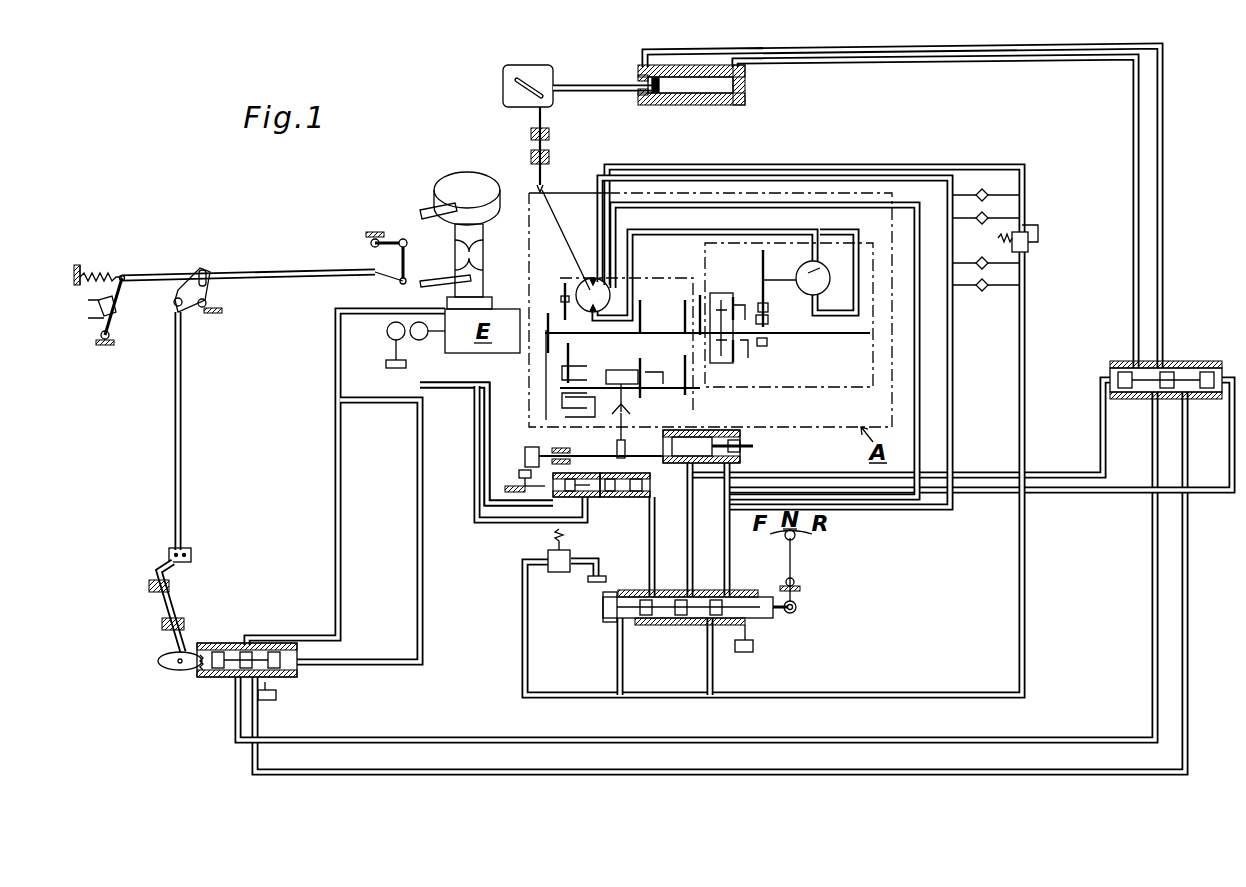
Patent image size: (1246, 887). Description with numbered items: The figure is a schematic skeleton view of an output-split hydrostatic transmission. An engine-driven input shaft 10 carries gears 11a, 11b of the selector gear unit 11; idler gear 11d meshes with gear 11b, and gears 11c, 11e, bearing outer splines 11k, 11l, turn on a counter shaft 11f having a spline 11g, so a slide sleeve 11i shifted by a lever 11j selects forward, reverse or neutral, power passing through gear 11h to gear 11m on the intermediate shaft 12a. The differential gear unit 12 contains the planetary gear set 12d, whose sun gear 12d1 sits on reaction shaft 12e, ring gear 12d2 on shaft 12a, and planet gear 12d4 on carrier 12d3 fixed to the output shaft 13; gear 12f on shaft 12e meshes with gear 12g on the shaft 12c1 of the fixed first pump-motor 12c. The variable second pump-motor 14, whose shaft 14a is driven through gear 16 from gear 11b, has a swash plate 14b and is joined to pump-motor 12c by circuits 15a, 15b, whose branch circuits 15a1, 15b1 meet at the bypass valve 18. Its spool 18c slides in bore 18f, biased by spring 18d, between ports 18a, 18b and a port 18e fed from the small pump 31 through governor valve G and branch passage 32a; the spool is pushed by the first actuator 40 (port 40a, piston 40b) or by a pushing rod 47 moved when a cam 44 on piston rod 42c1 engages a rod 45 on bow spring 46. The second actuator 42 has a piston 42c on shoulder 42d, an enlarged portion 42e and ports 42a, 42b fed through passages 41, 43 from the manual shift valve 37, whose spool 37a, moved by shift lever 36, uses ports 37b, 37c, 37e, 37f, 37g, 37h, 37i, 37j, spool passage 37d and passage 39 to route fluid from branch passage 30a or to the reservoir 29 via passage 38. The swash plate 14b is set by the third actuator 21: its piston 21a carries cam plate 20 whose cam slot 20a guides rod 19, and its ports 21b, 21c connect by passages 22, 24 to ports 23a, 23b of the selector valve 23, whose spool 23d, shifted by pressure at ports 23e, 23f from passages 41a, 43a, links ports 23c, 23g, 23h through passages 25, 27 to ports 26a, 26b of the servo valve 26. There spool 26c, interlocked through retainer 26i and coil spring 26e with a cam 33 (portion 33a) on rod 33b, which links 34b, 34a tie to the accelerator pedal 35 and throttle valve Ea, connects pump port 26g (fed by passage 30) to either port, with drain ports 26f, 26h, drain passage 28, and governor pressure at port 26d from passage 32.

The input shaft 10 is at (545, 355).
The selector gear unit 11 is at (646, 270).
The gear 11a is at (642, 320).
The gear 11b is at (560, 324).
The gear 11c is at (633, 410).
The idler gear 11d is at (560, 372).
The gear 11e is at (560, 392).
The counter shaft 11f is at (700, 388).
The outer spline 11g is at (565, 412).
The gear 11h is at (643, 361).
The slide sleeve 11i is at (621, 369).
The lever 11j is at (641, 416).
The outer spline 11k is at (645, 380).
The outer spline 11l is at (570, 362).
The gear 11m is at (650, 348).
The differential gear unit 12 is at (815, 393).
The intermediate shaft 12a is at (705, 272).
The first positive-displacement pump-motor 12c is at (820, 274).
The shaft 12c1 is at (768, 308).
The single planetary gear set 12d is at (740, 358).
The sun gear 12d1 is at (740, 296).
The ring gear 12d2 is at (745, 303).
The carrier 12d3 is at (736, 360).
The planet gear 12d4 is at (749, 350).
The reaction shaft 12e is at (767, 343).
The gear 12f is at (768, 322).
The gear 12g is at (766, 264).
The output shaft 13 is at (840, 333).
The second positive-displacement pump-motor 14 is at (598, 279).
The shaft 14a is at (577, 294).
The swash plate 14b is at (577, 286).
The hydraulic circuit 15a is at (651, 232).
The hydraulic circuit 15b is at (783, 205).
The first branch circuit 15a1 is at (920, 342).
The second branch circuit 15b1 is at (951, 386).
The gear 16 is at (560, 289).
The bypass valve 18 is at (606, 508).
The first port 18a is at (576, 456).
The second port 18b is at (565, 499).
The spool 18c is at (540, 481).
The coil spring 18d is at (577, 555).
The third port 18e is at (523, 560).
The cylindrical bore 18f is at (586, 499).
The rod 19 is at (533, 151).
The cam plate 20 is at (553, 97).
The cam slot 20a is at (517, 86).
The third actuator 21 is at (713, 113).
The piston 21a is at (655, 100).
The port 21b is at (638, 77).
The port 21c is at (745, 80).
The passage 22 is at (850, 60).
The selector valve 23 is at (1094, 401).
The port 23a is at (1166, 360).
The port 23b is at (1135, 368).
The port 23c is at (1180, 364).
The spool 23d is at (1200, 366).
The port 23e is at (1102, 379).
The port 23f is at (1195, 394).
The port 23g is at (1146, 395).
The port 23h is at (1221, 393).
The passage 24 is at (905, 50).
The passage 25 is at (875, 770).
The servo valve 26 is at (246, 633).
The port 26a is at (265, 690).
The port 26b is at (232, 677).
The spool 26c is at (285, 643).
The port 26d is at (297, 660).
The coil spring 26e is at (215, 643).
The port 26f is at (290, 681).
The port 26g is at (248, 643).
The port 26h is at (210, 681).
The retainer 26i is at (202, 672).
The passage 27 is at (825, 738).
The drain passage 28 is at (237, 700).
The reservoir 29 is at (740, 652).
The passage 30 is at (336, 480).
The branch passage 30a is at (378, 401).
The small pump 31 is at (387, 331).
The passage 32 is at (474, 488).
The branch passage 32a is at (485, 388).
The cam 33 is at (160, 667).
The cam surface 33a is at (166, 656).
The rod 33b is at (170, 596).
The link 34a is at (253, 277).
The link 34b is at (181, 374).
The accelerator pedal 35 is at (118, 318).
The shift lever 36 is at (793, 576).
The manual shift valve 37 is at (805, 610).
The spool 37a is at (775, 613).
The port 37b is at (615, 613).
The port 37c is at (660, 597).
The passage 37d is at (640, 597).
The port 37e is at (665, 621).
The port 37f is at (700, 597).
The port 37g is at (700, 623).
The port 37h is at (745, 597).
The port 37i is at (752, 648).
The port 37j is at (625, 621).
The passage 38 is at (625, 655).
The passage 39 is at (654, 545).
The first actuator 40 is at (650, 486).
The port 40a is at (610, 499).
The piston 40b is at (604, 521).
The passage 41 is at (692, 545).
The passage 41a is at (965, 474).
The second actuator 42 is at (755, 453).
The first port 42a is at (626, 448).
The second port 42b is at (740, 456).
The piston 42c is at (722, 436).
The piston rod 42c1 is at (700, 440).
The shoulder 42d is at (700, 466).
The enlarged portion 42e is at (742, 446).
The passage 43 is at (729, 545).
The passage 43a is at (1070, 492).
The cam 44 is at (525, 456).
The rod 45 is at (518, 473).
The bow spring 46 is at (505, 488).
The pushing rod 47 is at (518, 521).
The throttle valve Ea is at (471, 278).
The governor valve G is at (427, 316).